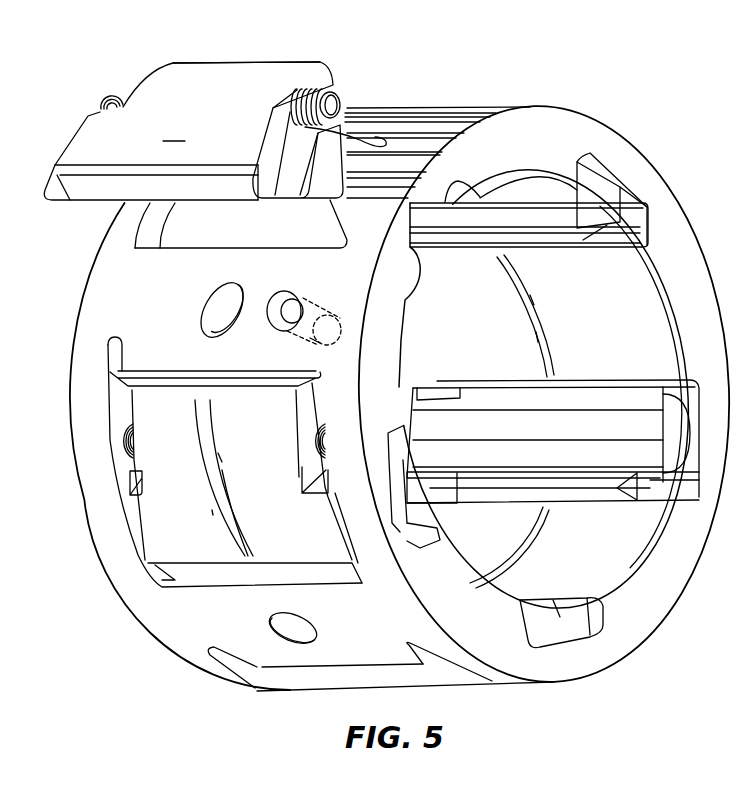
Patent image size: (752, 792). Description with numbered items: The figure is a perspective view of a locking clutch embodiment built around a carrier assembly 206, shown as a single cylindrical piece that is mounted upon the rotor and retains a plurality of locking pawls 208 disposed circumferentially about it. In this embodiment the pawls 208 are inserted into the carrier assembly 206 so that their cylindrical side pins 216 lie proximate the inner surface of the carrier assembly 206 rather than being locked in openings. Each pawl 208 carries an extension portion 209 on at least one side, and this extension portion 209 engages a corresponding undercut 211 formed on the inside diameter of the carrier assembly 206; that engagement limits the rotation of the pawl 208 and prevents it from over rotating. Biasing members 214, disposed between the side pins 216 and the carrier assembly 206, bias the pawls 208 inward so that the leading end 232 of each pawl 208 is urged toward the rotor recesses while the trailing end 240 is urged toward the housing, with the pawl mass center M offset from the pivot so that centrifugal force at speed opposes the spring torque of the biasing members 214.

The carrier assembly 206 is at (570, 131).
The locking pawl 208 is at (235, 73).
The extension portion 209 is at (345, 155).
The undercut 211 is at (447, 198).
The biasing member 214 is at (320, 67).
The cylindrical side pin 216 is at (335, 103).
The leading end 232 is at (93, 192).
The trailing end 240 is at (200, 62).